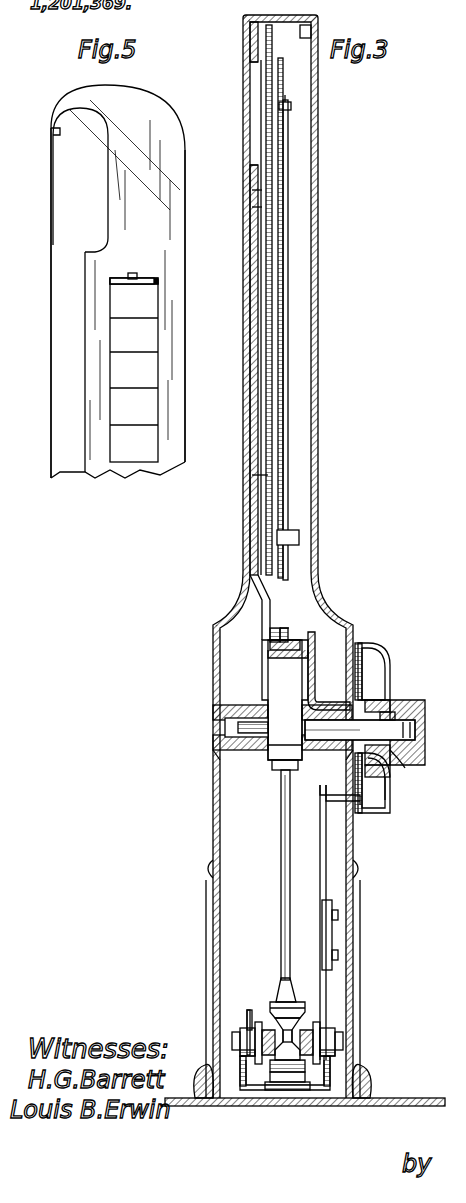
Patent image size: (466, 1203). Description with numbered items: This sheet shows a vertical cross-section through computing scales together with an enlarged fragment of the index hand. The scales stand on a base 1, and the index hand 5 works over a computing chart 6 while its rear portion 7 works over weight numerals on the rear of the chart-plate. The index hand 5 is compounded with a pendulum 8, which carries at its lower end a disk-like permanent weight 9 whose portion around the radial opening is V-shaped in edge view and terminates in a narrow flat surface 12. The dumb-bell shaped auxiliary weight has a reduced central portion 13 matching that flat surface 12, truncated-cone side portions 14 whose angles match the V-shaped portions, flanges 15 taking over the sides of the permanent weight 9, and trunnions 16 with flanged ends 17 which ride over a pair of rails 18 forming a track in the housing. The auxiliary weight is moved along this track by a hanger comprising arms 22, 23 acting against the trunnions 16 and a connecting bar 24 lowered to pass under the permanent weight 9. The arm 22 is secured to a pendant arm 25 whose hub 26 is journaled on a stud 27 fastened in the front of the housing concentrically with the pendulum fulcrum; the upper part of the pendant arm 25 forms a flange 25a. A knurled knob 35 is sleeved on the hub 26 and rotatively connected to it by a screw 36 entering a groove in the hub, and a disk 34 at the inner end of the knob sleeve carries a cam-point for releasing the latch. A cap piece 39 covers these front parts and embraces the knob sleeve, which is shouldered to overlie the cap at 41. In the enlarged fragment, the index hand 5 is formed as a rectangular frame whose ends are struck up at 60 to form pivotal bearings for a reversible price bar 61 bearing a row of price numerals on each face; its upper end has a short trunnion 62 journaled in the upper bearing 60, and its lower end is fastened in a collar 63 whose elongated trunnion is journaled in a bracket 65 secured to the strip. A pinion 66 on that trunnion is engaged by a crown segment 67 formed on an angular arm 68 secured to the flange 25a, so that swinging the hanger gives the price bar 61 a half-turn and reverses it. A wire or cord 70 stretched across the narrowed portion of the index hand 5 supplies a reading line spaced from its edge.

In FIG. 3, the base 1 is at (445, 1100).
In FIG. 5, the index hand 5 is at (185, 252).
In FIG. 3, the index hand 5 is at (283, 465).
In FIG. 3, the computing chart 6 is at (270, 118).
In FIG. 3, the rear portion of index hand 7 is at (265, 515).
In FIG. 3, the pendulum 8 is at (291, 937).
In FIG. 3, the permanent weight 9 is at (302, 1014).
In FIG. 3, the flat surface 12 is at (287, 1060).
In FIG. 3, the reduced central portion 13 is at (262, 1035).
In FIG. 3, the side portions 14 is at (302, 1040).
In FIG. 3, the flanges 15 is at (315, 1035).
In FIG. 3, the trunnions 16 is at (337, 1040).
In FIG. 3, the flanged ends 17 is at (343, 1042).
In FIG. 3, the rails 18 is at (340, 1080).
In FIG. 3, the hanger arm 22 is at (330, 1000).
In FIG. 3, the hanger arm 23 is at (248, 1010).
In FIG. 3, the connecting bar 24 is at (312, 1092).
In FIG. 3, the pendant arm 25 is at (355, 862).
In FIG. 3, the flange 25a is at (378, 690).
In FIG. 3, the hub 26 is at (392, 712).
In FIG. 3, the stud 27 is at (415, 730).
In FIG. 3, the disk 34 is at (392, 770).
In FIG. 3, the knurled knob 35 is at (425, 705).
In FIG. 3, the screw 36 is at (405, 768).
In FIG. 3, the cap piece 39 is at (378, 800).
In FIG. 3, the shoulder 41 is at (405, 790).
In FIG. 5, the pivotal bearings 60 is at (156, 281).
In FIG. 3, the pivotal bearings 60 is at (291, 107).
In FIG. 5, the price bar 61 is at (153, 365).
In FIG. 3, the price bar 61 is at (290, 402).
In FIG. 5, the short trunnion 62 is at (133, 272).
In FIG. 3, the collar 63 is at (299, 535).
In FIG. 3, the bracket 65 is at (275, 652).
In FIG. 3, the pinion 66 is at (292, 628).
In FIG. 3, the crown segment 67 is at (312, 645).
In FIG. 3, the angular arm 68 is at (312, 670).
In FIG. 5, the wire or cord 70 is at (51, 427).